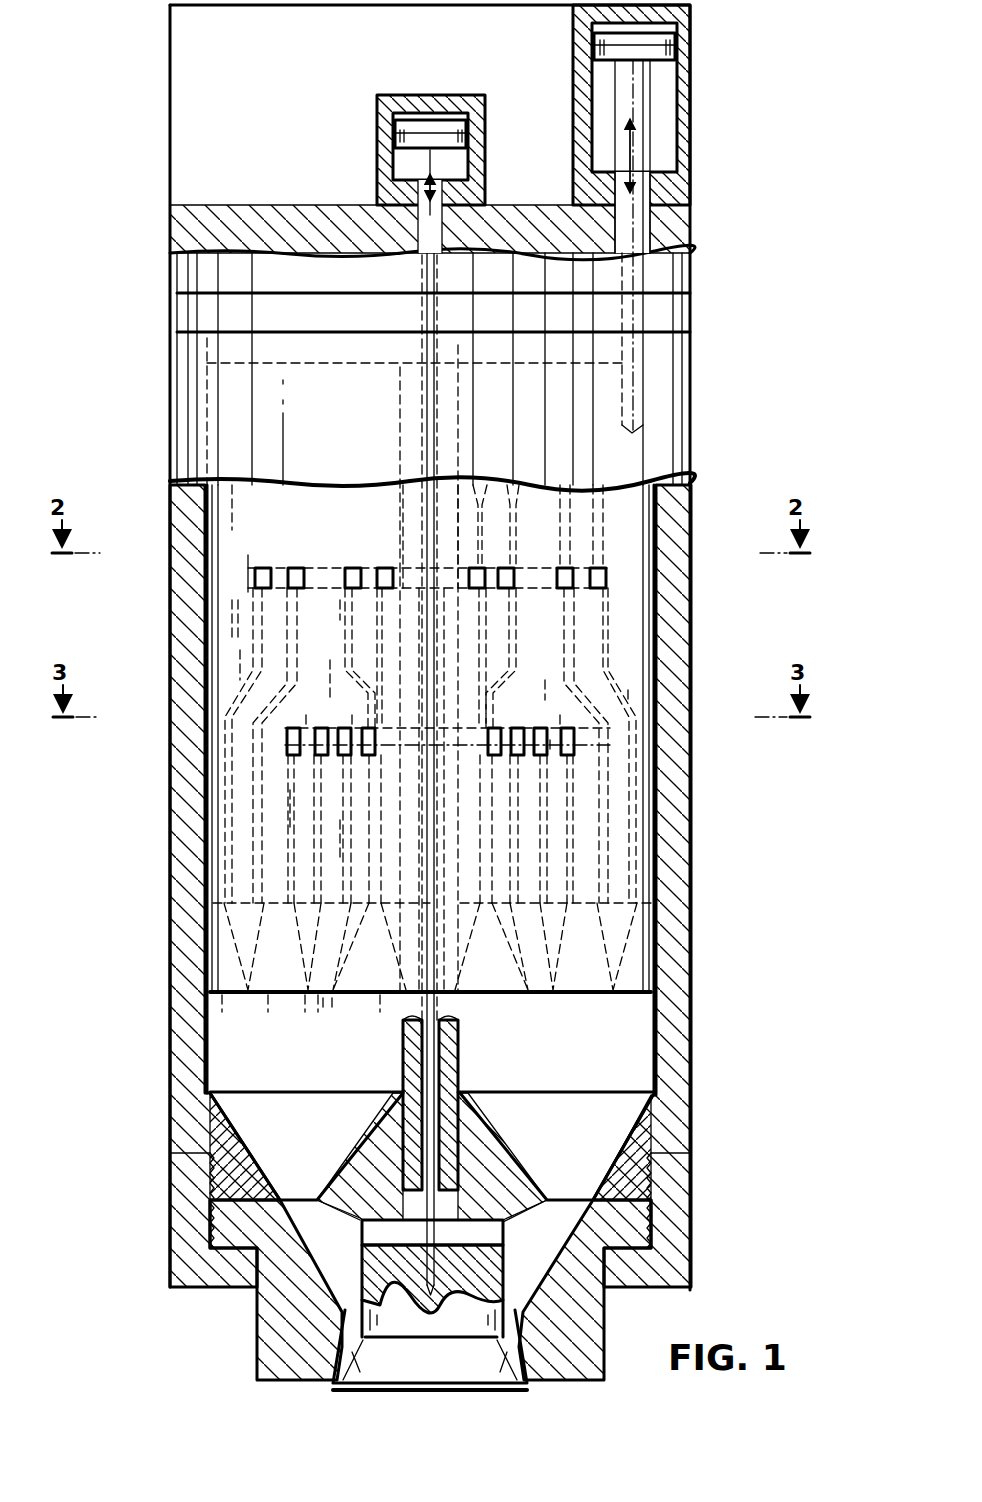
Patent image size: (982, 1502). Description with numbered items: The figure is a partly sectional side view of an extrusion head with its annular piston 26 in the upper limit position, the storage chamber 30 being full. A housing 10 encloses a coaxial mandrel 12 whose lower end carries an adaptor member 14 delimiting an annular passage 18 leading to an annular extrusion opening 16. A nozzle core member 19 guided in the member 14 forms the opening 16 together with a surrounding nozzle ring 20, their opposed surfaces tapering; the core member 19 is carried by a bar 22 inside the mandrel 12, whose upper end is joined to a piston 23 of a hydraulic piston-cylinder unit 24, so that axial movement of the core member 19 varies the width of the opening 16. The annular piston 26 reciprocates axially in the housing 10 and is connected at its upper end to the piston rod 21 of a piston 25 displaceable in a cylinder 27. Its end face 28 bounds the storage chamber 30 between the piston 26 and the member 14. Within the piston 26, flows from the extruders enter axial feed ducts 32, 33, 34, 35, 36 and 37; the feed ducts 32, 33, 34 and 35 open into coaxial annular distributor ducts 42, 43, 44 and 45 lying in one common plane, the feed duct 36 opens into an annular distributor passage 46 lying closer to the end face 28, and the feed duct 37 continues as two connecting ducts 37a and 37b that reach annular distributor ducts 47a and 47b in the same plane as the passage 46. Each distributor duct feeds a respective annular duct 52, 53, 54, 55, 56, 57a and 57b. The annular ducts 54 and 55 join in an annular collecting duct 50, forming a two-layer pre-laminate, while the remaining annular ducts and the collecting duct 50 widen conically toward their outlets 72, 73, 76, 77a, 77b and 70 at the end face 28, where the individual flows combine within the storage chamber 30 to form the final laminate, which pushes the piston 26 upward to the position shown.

The housing 10 is at (678, 828).
The mandrel 12 is at (455, 1076).
The adaptor member 14 is at (500, 1187).
The annular extrusion opening 16 is at (522, 1382).
The annular passage 18 is at (538, 1270).
The nozzle core member 19 is at (445, 1360).
The nozzle ring 20 is at (300, 1356).
The piston rod 21 is at (645, 105).
The bar 22 is at (428, 1075).
The piston 23 is at (440, 135).
The hydraulic piston-cylinder unit 24 is at (377, 160).
The piston 25 is at (660, 50).
The annular piston 26 is at (630, 690).
The cylinder 27 is at (680, 138).
The end face 28 is at (498, 995).
The storage chamber 30 is at (598, 1067).
The feed duct 32 is at (600, 553).
The feed duct 33 is at (575, 500).
The feed duct 34 is at (520, 495).
The feed duct 35 is at (490, 492).
The feed duct 36 is at (540, 658).
The feed duct 37 is at (545, 690).
The connecting duct 37a is at (560, 720).
The connecting duct 37b is at (550, 742).
The annular distributor duct 42 is at (258, 565).
The annular distributor duct 43 is at (292, 565).
The annular distributor duct 44 is at (350, 565).
The annular distributor duct 45 is at (382, 565).
The annular distributor passage 46 is at (333, 687).
The annular distributor duct 47a is at (312, 745).
The annular distributor duct 47b is at (357, 745).
The annular collecting duct 50 is at (375, 873).
The annular duct 52 is at (248, 660).
The annular duct 53 is at (288, 643).
The annular duct 54 is at (290, 613).
The annular duct 55 is at (385, 607).
The annular duct 56 is at (310, 785).
The annular duct 57a is at (290, 808).
The annular duct 57b is at (340, 836).
The outlet 70 is at (385, 998).
The outlet 72 is at (228, 998).
The outlet 73 is at (270, 998).
The outlet 76 is at (306, 998).
The outlet 77a is at (334, 1015).
The outlet 77b is at (326, 1015).